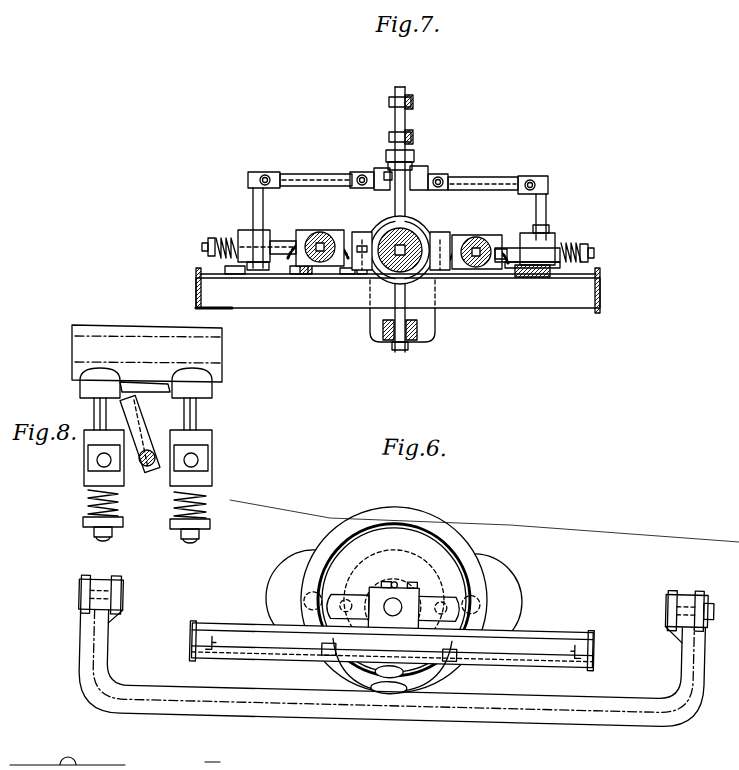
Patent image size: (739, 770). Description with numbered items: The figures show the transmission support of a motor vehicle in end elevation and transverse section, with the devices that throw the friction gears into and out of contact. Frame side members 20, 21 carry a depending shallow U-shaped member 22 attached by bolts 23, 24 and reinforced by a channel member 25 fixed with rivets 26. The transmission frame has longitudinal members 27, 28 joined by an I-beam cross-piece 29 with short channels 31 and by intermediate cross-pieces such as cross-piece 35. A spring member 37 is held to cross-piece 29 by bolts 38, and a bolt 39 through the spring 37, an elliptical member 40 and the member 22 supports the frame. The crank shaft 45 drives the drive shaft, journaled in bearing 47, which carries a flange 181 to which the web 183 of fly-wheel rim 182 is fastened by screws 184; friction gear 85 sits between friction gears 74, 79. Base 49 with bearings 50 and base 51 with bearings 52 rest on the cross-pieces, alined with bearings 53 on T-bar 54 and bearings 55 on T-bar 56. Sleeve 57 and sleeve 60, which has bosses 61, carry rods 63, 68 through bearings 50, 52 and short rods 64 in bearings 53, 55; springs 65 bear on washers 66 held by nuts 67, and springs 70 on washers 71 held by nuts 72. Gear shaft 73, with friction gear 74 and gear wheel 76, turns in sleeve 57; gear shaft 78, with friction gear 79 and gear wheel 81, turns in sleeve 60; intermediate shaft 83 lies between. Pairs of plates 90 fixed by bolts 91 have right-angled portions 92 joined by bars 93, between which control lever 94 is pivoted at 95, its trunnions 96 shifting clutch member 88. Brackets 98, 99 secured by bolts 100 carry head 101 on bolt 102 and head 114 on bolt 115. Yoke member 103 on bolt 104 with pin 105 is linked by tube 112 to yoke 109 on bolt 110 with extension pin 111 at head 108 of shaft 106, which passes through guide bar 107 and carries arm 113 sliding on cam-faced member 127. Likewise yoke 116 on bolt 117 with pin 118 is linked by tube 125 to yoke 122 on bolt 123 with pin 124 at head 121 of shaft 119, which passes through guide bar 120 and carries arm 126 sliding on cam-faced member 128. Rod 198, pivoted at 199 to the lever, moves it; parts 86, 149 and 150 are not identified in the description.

In FIG. 6, the side members 20 is at (86, 583).
In FIG. 6, the side members 21 is at (672, 584).
In FIG. 6, the depending shallow U-shaped member 22 is at (565, 700).
In FIG. 6, the bolts 23 is at (122, 595).
In FIG. 6, the bolts 24 is at (713, 600).
In FIG. 6, the channel member 25 is at (536, 720).
In FIG. 6, the rivets 26 is at (178, 692).
In FIG. 7, the longitudinal member 27 is at (196, 290).
In FIG. 6, the longitudinal member 27 is at (190, 644).
In FIG. 7, the longitudinal member 28 is at (600, 293).
In FIG. 6, the longitudinal member 28 is at (607, 651).
In FIG. 6, the I-beam cross-piece 29 is at (252, 628).
In FIG. 6, the intermediate blocks or short channels 31 is at (216, 647).
In FIG. 7, the intermediate cross-piece 35 is at (530, 308).
In FIG. 6, the spring member 37 is at (425, 690).
In FIG. 6, the bolts 38 is at (325, 657).
In FIG. 6, the bolt 39 is at (391, 666).
In FIG. 6, the elliptical member 40 is at (385, 694).
In FIG. 6, the crank shaft 45 is at (392, 613).
In FIG. 6, the bearing 47 is at (430, 600).
In FIG. 7, the base 49 is at (245, 274).
In FIG. 7, the bearings 50 is at (238, 238).
In FIG. 7, the base 51 is at (545, 280).
In FIG. 7, the bearings 52 is at (555, 245).
In FIG. 8, the bearings 52 is at (212, 461).
In FIG. 7, the bearings 53 is at (358, 231).
In FIG. 7, the T-bar 54 is at (360, 274).
In FIG. 7, the bearings 55 is at (472, 244).
In FIG. 7, the T-bar 56 is at (437, 285).
In FIG. 7, the sleeve 57 is at (326, 236).
In FIG. 7, the sleeve 60 is at (481, 244).
In FIG. 8, the sleeve 60 is at (156, 327).
In FIG. 8, the bosses 61 is at (80, 388).
In FIG. 7, the rods 63 is at (296, 274).
In FIG. 7, the short rods 64 is at (345, 274).
In FIG. 7, the springs 65 is at (215, 256).
In FIG. 7, the washers 66 is at (213, 240).
In FIG. 7, the nuts 67 is at (208, 247).
In FIG. 7, the rods 68 is at (527, 278).
In FIG. 8, the rods 68 is at (93, 406).
In FIG. 7, the springs 70 is at (581, 248).
In FIG. 8, the springs 70 is at (87, 506).
In FIG. 7, the washers 71 is at (587, 253).
In FIG. 8, the washers 71 is at (83, 522).
In FIG. 7, the nuts 72 is at (590, 257).
In FIG. 8, the nuts 72 is at (94, 533).
In FIG. 7, the gear shaft 73 is at (320, 241).
In FIG. 6, the friction gear 74 is at (283, 568).
In FIG. 7, the gear wheel 76 is at (308, 216).
In FIG. 7, the gear shaft 78 is at (475, 240).
In FIG. 8, the gear shaft 78 is at (172, 362).
In FIG. 6, the friction gear 79 is at (500, 575).
In FIG. 7, the gear wheel 81 is at (488, 221).
In FIG. 7, the intermediate shaft 83 is at (377, 294).
In FIG. 6, the friction gear 85 is at (400, 588).
In FIG. 7, the block 86 is at (364, 232).
In FIG. 7, the clutch member 88 is at (398, 233).
In FIG. 7, the pairs of plates 90 is at (371, 322).
In FIG. 7, the bolts 91 is at (402, 242).
In FIG. 7, the portions 92 is at (386, 338).
In FIG. 7, the bars 93 is at (400, 346).
In FIG. 7, the operating or control lever 94 is at (399, 88).
In FIG. 7, the pivotal connection 95 is at (416, 328).
In FIG. 7, the trunnions 96 is at (436, 232).
In FIG. 7, the bracket 98 is at (394, 150).
In FIG. 7, the bracket 99 is at (407, 161).
In FIG. 7, the bolts 100 is at (414, 155).
In FIG. 7, the head 101 is at (378, 168).
In FIG. 7, the bolt 102 is at (385, 167).
In FIG. 7, the yoke member 103 is at (356, 172).
In FIG. 7, the bolt 104 is at (362, 170).
In FIG. 7, the pin 105 is at (328, 178).
In FIG. 7, the shaft 106 is at (253, 197).
In FIG. 7, the guide bar 107 is at (250, 222).
In FIG. 7, the head 108 is at (255, 172).
In FIG. 7, the yoke 109 is at (280, 173).
In FIG. 7, the bolt 110 is at (266, 175).
In FIG. 7, the extension pin 111 is at (296, 177).
In FIG. 7, the tube 112 is at (316, 174).
In FIG. 7, the arm 113 is at (278, 241).
In FIG. 7, the head 114 is at (417, 191).
In FIG. 7, the bolt 115 is at (425, 172).
In FIG. 7, the yoke 116 is at (450, 178).
In FIG. 7, the bolt 117 is at (443, 176).
In FIG. 7, the outstanding pin 118 is at (458, 190).
In FIG. 7, the shaft 119 is at (547, 206).
In FIG. 7, the guide bar 120 is at (550, 229).
In FIG. 8, the guide bar 120 is at (84, 455).
In FIG. 7, the head 121 is at (548, 182).
In FIG. 7, the yoke 122 is at (530, 176).
In FIG. 7, the bolt 123 is at (533, 181).
In FIG. 7, the outstanding pin 124 is at (500, 183).
In FIG. 7, the tube 125 is at (492, 177).
In FIG. 7, the arm 126 is at (505, 249).
In FIG. 8, the arm 126 is at (147, 435).
In FIG. 7, the cam-faced member 127 is at (305, 274).
In FIG. 7, the cam-faced member 128 is at (500, 268).
In FIG. 8, the cam-faced member 128 is at (145, 392).
In FIG. 7, the nut 149 is at (411, 133).
In FIG. 7, the lock nut 150 is at (413, 137).
In FIG. 6, the flange 181 is at (374, 580).
In FIG. 6, the rim 182 is at (414, 512).
In FIG. 6, the web 183 is at (388, 538).
In FIG. 6, the screws 184 is at (398, 580).
In FIG. 7, the rod 198 is at (411, 98).
In FIG. 7, the pivotal connection 199 is at (413, 101).